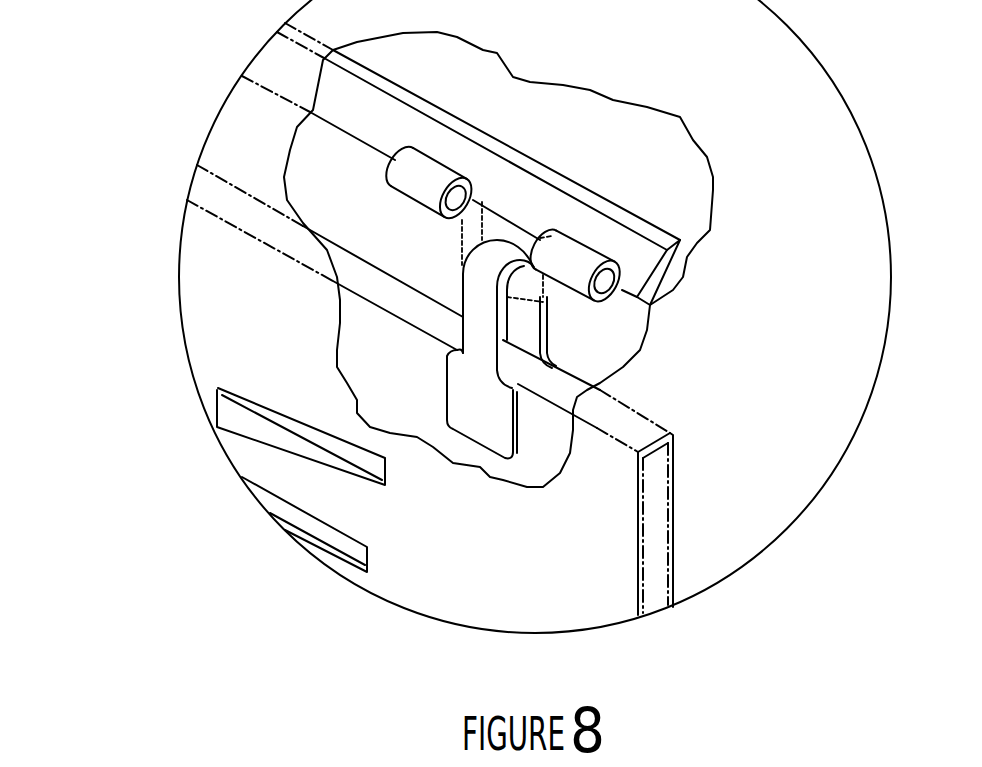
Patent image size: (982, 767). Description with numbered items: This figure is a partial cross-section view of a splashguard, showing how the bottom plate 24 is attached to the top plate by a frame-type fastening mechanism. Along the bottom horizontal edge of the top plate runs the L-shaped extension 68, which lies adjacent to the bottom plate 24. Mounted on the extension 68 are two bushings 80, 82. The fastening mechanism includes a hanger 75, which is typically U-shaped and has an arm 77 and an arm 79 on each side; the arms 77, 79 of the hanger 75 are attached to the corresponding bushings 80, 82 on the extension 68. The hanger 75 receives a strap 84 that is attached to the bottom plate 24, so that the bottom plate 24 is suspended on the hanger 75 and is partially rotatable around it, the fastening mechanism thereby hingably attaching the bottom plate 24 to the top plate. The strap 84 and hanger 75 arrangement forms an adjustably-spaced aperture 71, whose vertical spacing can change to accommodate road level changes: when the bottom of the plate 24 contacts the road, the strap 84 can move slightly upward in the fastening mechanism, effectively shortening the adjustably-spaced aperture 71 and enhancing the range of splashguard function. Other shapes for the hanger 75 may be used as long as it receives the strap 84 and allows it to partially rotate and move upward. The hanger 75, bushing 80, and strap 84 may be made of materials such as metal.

The bottom plate 24 is at (620, 532).
The L-shaped extension 68 is at (262, 110).
The adjustably-spaced aperture 71 is at (237, 137).
The hanger 75 is at (474, 208).
The arm 77 is at (468, 204).
The arm 79 is at (543, 236).
The bushing 80 is at (443, 172).
The bushing 82 is at (590, 255).
The strap 84 is at (498, 399).